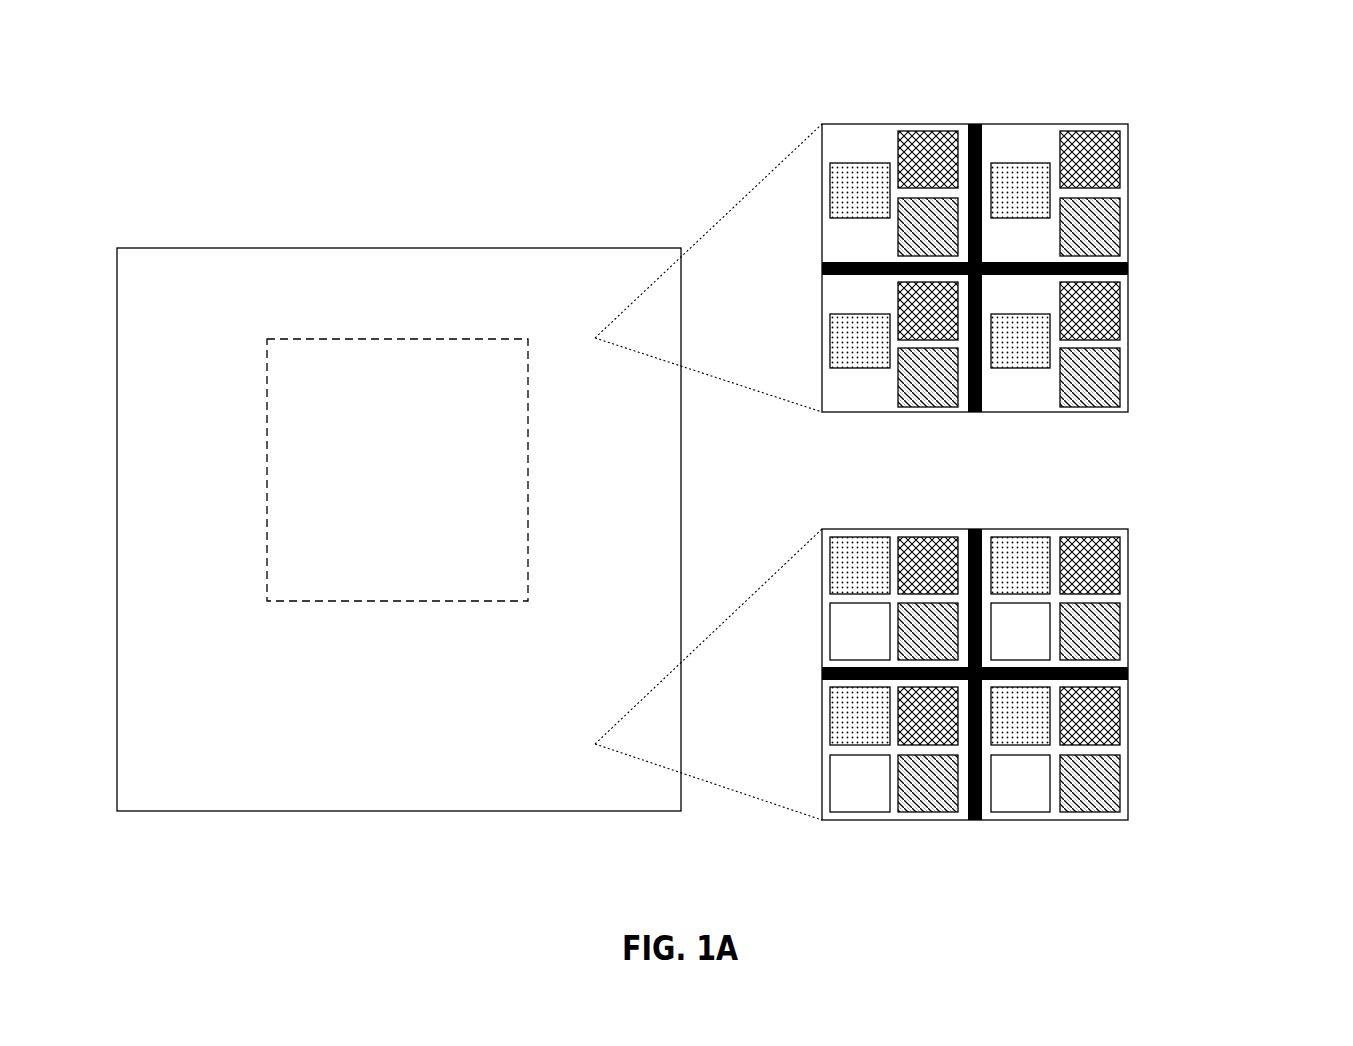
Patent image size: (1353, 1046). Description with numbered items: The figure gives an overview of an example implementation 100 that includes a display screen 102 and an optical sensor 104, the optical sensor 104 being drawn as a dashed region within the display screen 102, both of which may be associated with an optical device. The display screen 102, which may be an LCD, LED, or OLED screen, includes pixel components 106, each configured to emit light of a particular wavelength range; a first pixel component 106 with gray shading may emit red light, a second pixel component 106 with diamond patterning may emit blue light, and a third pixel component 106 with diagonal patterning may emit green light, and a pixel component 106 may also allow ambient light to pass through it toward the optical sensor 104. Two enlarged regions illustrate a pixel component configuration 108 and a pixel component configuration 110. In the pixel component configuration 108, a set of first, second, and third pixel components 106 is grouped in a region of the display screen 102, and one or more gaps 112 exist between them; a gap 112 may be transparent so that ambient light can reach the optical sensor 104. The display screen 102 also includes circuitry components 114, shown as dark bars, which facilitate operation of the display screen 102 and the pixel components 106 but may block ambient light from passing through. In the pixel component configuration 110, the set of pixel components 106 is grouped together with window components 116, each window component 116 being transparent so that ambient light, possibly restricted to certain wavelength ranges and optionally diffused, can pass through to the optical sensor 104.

The example implementation 100 is at (197, 69).
The display screen 102 is at (495, 279).
The optical sensor 104 is at (495, 373).
The pixel component 106 is at (1090, 637).
The pixel component configuration 108 is at (980, 251).
The pixel component configuration 110 is at (980, 658).
The gap 112 is at (1017, 396).
The circuitry component 114 is at (1139, 278).
The window component 116 is at (871, 796).